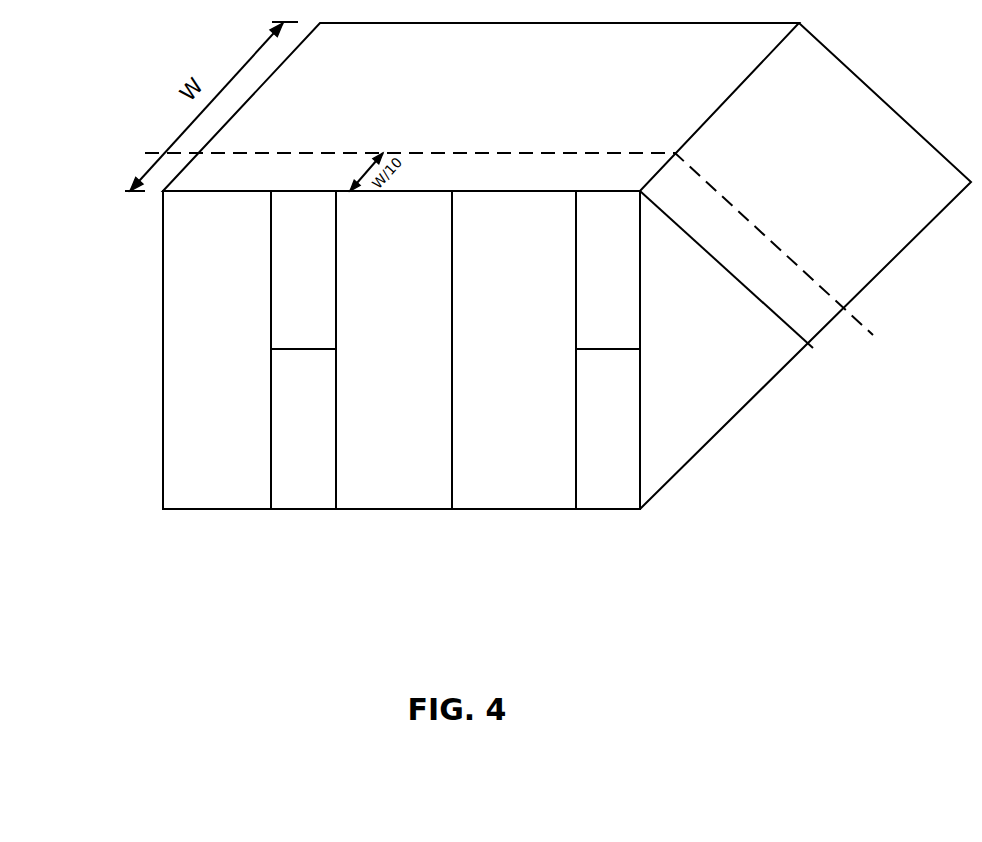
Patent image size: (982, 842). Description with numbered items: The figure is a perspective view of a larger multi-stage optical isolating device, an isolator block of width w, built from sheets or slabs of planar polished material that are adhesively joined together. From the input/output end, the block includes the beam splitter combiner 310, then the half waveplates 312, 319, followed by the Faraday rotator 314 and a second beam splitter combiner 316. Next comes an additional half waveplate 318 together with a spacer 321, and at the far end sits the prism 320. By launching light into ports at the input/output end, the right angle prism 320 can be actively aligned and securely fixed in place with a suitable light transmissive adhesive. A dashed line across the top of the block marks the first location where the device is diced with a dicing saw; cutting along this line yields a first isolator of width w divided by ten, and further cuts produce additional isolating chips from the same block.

The beam splitter combiner 310 is at (218, 501).
The half waveplate 312 is at (285, 203).
The Faraday rotator 314 is at (398, 501).
The beam splitter combiner 316 is at (528, 501).
The additional half waveplate 318 is at (592, 202).
The half waveplate 319 is at (308, 501).
The prism 320 is at (706, 443).
The spacer 321 is at (622, 501).